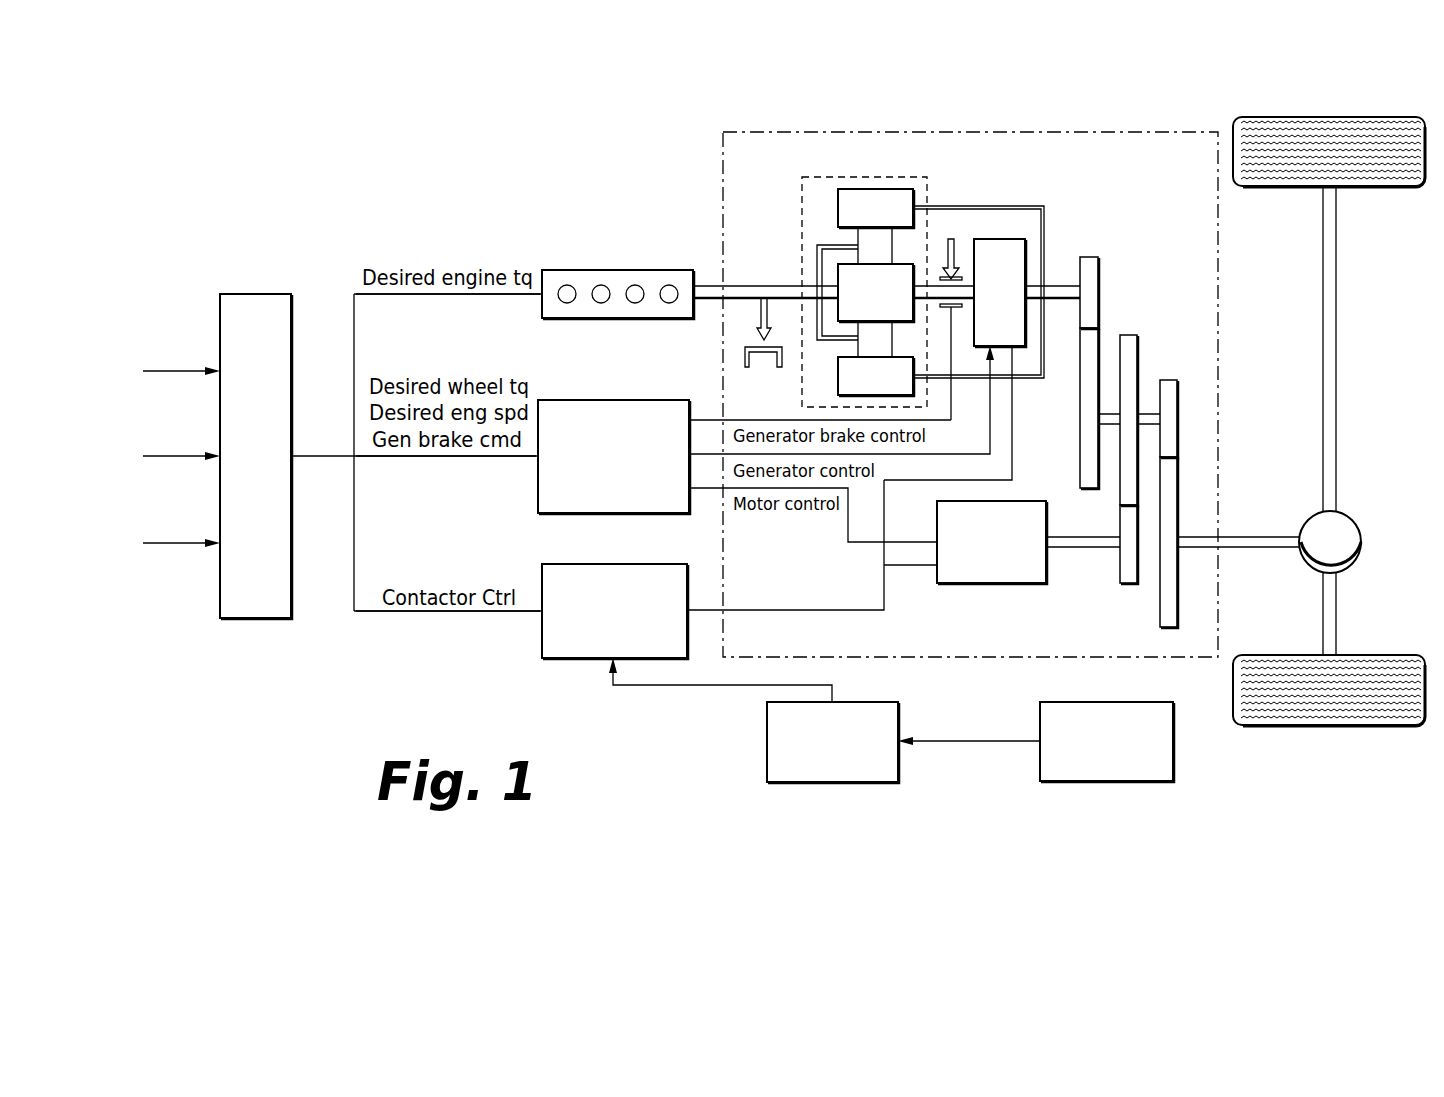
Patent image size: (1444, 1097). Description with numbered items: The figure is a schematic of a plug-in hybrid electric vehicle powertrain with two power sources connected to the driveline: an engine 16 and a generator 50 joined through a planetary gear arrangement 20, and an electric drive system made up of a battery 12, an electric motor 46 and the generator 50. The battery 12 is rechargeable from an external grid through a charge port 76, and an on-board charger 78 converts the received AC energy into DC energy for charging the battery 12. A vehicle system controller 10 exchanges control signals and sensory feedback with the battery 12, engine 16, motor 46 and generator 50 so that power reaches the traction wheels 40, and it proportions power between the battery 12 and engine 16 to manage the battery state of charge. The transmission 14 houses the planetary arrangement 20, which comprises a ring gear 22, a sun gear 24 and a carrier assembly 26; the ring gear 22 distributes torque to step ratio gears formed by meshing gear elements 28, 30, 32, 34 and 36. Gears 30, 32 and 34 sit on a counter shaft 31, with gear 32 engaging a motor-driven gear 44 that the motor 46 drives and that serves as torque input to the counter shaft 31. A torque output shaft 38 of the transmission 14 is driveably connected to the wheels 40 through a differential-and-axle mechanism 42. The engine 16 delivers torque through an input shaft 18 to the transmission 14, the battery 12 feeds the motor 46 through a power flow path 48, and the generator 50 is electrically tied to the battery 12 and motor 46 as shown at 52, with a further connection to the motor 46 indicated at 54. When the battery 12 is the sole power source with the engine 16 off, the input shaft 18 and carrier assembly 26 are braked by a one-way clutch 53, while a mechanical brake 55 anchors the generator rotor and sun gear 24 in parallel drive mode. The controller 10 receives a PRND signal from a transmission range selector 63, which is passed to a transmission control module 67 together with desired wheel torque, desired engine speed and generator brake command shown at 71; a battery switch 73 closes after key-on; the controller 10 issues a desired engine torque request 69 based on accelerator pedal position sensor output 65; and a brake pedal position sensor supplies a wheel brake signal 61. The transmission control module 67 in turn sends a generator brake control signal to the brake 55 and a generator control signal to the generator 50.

The vehicle system controller 10 is at (257, 294).
The battery 12 is at (617, 564).
The transmission 14 is at (933, 658).
The engine 16 is at (570, 270).
The input shaft 18 is at (708, 285).
The planetary gear arrangement 20 is at (938, 199).
The ring gear 22 is at (838, 210).
The sun gear 24 is at (838, 280).
The carrier assembly 26 is at (817, 256).
The gear element 28 is at (1098, 273).
The gear element 30 is at (1080, 453).
The counter shaft 31 is at (1147, 414).
The gear element 32 is at (1130, 335).
The gear element 34 is at (1177, 382).
The gear element 36 is at (1177, 498).
The torque output shaft 38 is at (1240, 537).
The traction wheels 40 is at (1330, 117).
The differential-and-axle mechanism 42 is at (1363, 542).
The motor-driven gear 44 is at (1128, 584).
The electric motor 46 is at (982, 584).
The power flow path 48 is at (785, 611).
The generator 50 is at (1025, 266).
The generator electrical connection 52 is at (897, 481).
The one-way clutch 53 is at (745, 358).
The motor electrical connection 54 is at (900, 567).
The mechanical brake 55 is at (948, 257).
The wheel brake signal 61 is at (175, 547).
The transmission range selector 63 is at (175, 374).
The accelerator pedal position sensor output 65 is at (175, 460).
The transmission control module 67 is at (630, 400).
The desired engine torque request 69 is at (428, 296).
The desired wheel torque, desired engine speed and generator brake command 71 is at (428, 458).
The battery switch 73 is at (428, 613).
The charge port 76 is at (1107, 782).
The on-board charger 78 is at (832, 783).